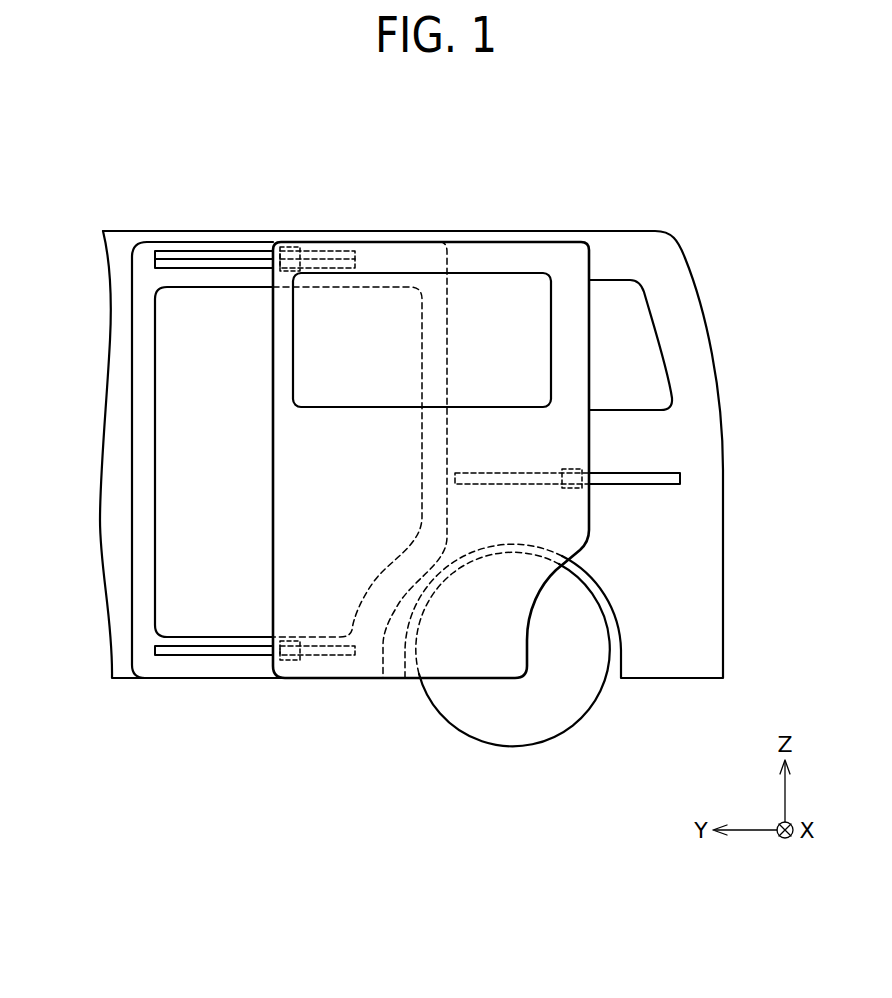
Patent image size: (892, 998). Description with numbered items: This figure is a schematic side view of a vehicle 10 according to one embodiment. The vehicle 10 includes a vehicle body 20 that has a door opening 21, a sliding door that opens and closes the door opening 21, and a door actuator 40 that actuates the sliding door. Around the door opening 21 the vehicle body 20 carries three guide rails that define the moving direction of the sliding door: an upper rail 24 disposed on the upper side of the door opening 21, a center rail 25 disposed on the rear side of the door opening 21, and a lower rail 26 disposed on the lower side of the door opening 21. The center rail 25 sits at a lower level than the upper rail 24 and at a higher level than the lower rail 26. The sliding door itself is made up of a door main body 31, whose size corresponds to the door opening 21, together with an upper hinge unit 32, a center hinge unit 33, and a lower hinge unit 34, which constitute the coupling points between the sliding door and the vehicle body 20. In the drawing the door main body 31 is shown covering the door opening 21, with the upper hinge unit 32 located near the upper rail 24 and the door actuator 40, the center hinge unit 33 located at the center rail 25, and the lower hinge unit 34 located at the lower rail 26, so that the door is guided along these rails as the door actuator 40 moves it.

The vehicle 10 is at (460, 436).
The vehicle body 20 is at (618, 231).
The door opening 21 is at (168, 527).
The upper rail 24 is at (160, 265).
The center rail 25 is at (673, 484).
The lower rail 26 is at (167, 657).
The door main body 31 is at (272, 508).
The upper hinge unit 32 is at (286, 248).
The center hinge unit 33 is at (571, 469).
The lower hinge unit 34 is at (290, 642).
The door actuator 40 is at (336, 248).